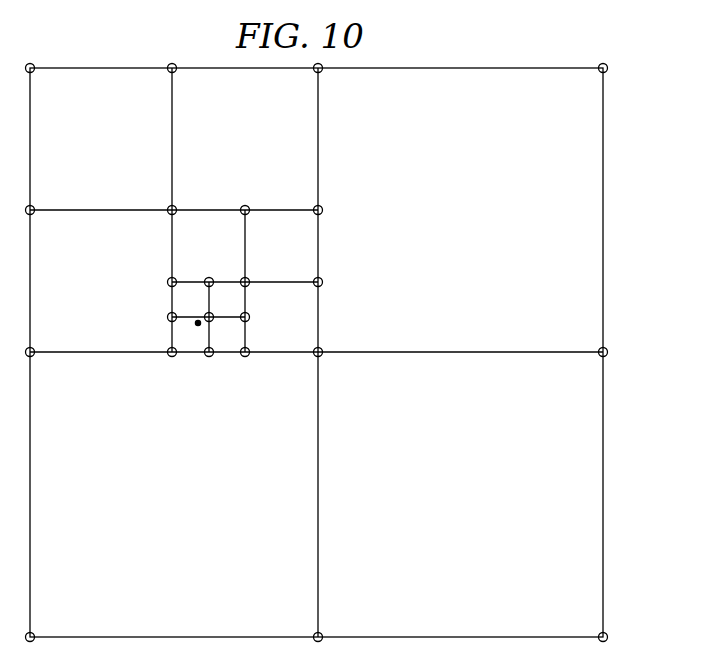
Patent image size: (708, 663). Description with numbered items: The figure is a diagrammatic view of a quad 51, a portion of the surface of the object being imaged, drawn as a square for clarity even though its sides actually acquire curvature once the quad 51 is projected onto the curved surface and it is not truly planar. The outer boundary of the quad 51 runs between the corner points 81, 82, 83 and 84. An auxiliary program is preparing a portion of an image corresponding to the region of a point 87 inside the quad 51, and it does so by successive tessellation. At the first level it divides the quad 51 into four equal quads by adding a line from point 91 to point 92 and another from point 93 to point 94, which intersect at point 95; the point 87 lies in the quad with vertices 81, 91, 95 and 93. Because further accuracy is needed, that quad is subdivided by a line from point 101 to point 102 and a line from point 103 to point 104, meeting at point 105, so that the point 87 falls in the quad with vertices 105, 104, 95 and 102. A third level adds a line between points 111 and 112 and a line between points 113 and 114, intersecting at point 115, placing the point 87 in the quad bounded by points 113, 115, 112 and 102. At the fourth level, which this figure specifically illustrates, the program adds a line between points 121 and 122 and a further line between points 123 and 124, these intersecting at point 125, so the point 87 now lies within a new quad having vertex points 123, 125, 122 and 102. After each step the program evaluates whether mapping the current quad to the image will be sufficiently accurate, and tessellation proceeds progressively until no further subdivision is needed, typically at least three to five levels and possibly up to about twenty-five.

The quad 51 is at (607, 443).
The point 81 is at (33, 72).
The point 82 is at (599, 72).
The point 83 is at (600, 633).
The point 84 is at (33, 633).
The point 91 is at (321, 72).
The point 92 is at (315, 633).
The point 93 is at (33, 356).
The point 94 is at (600, 348).
The point 95 is at (321, 348).
The point 101 is at (175, 72).
The point 102 is at (171, 357).
The point 103 is at (33, 206).
The point 104 is at (321, 206).
The point 105 is at (169, 206).
The point 111 is at (248, 206).
The point 112 is at (248, 356).
The point 113 is at (169, 278).
The point 114 is at (321, 278).
The point 115 is at (248, 278).
The point 121 is at (210, 278).
The point 122 is at (210, 357).
The point 123 is at (168, 315).
The point 124 is at (250, 316).
The point 125 is at (213, 320).
The point 87 is at (195, 325).